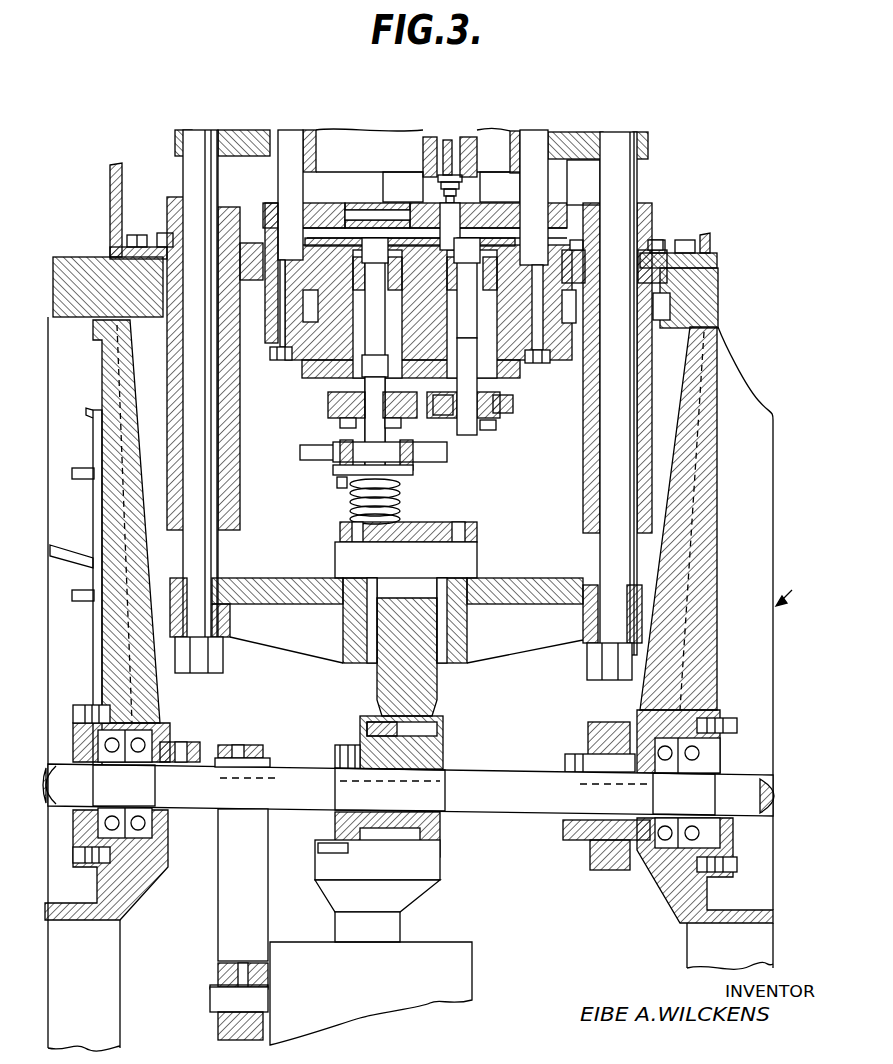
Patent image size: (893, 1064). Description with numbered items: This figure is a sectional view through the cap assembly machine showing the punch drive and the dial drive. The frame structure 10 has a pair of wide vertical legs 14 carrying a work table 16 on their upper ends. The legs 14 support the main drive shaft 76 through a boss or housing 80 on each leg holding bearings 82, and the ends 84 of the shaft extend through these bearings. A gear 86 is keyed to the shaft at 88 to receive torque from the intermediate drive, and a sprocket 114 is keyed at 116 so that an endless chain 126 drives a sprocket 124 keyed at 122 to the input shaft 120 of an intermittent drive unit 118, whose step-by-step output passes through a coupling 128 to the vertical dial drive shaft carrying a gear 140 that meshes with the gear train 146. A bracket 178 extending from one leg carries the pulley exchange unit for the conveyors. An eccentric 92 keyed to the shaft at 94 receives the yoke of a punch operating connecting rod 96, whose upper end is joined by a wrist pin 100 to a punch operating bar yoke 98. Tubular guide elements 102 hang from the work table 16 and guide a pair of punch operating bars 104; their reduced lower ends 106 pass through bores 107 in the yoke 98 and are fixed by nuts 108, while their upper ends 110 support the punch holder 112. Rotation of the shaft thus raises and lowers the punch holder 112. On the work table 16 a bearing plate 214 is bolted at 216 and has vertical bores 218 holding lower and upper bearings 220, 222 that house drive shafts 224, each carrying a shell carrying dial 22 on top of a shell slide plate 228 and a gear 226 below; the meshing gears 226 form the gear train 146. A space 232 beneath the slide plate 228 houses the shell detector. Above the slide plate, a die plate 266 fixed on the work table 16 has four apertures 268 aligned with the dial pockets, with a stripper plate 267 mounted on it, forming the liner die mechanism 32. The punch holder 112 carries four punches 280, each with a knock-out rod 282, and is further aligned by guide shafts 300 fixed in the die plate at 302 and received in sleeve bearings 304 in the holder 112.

The frame structure 10 is at (794, 587).
The legs or standards 14 is at (774, 495).
The work table 16 is at (83, 257).
The shell carrying dials 22 is at (345, 222).
The liner die mechanism 32 is at (462, 205).
The main drive shaft 76 is at (495, 765).
The boss or housing 80 is at (152, 868).
The bearings 82 is at (78, 859).
The ends of main drive shaft 84 is at (78, 762).
The gear 86 is at (590, 860).
The key 88 is at (578, 758).
The eccentric 92 is at (443, 742).
The key 94 is at (335, 757).
The punch operating connecting rod 96 is at (437, 695).
The punch operating bar yoke 98 is at (495, 588).
The wrist pin 100 is at (477, 545).
The tubular bearings or guide elements 102 is at (240, 455).
The punch operating bars 104 is at (220, 568).
The reduced lower ends 106 is at (235, 588).
The bores 107 is at (583, 592).
The nuts 108 is at (223, 655).
The upper ends of bars 110 is at (185, 130).
The punch holder member 112 is at (648, 152).
The gear or sprocket 114 is at (225, 746).
The key 116 is at (275, 778).
The intermittent drive unit 118 is at (418, 942).
The input shaft 120 is at (210, 1000).
The key 122 is at (210, 986).
The gear or sprocket 124 is at (218, 968).
The endless chain or sprocket drive 126 is at (268, 905).
The coupling 128 is at (410, 903).
The gear 140 is at (447, 456).
The gear train 146 is at (508, 415).
The bracket 178 is at (93, 444).
The bearing plate or housing 214 is at (362, 382).
The bolts 216 is at (285, 360).
The vertical bores 218 is at (537, 363).
The lower bearings 220 is at (328, 403).
The upper bearings 222 is at (454, 250).
The drive shafts 224 is at (467, 436).
The gears 226 is at (337, 443).
The shell slide plate 228 is at (362, 244).
The space 232 is at (585, 262).
The die plate 266 is at (567, 203).
The stripper plate 267 is at (370, 210).
The apertures 268 is at (438, 178).
The punches 280 is at (390, 178).
The knock-out rod 282 is at (440, 142).
The guide shafts or pins 300 is at (278, 196).
The guide shaft mounting 302 is at (264, 213).
The sleeve bearings 304 is at (270, 130).